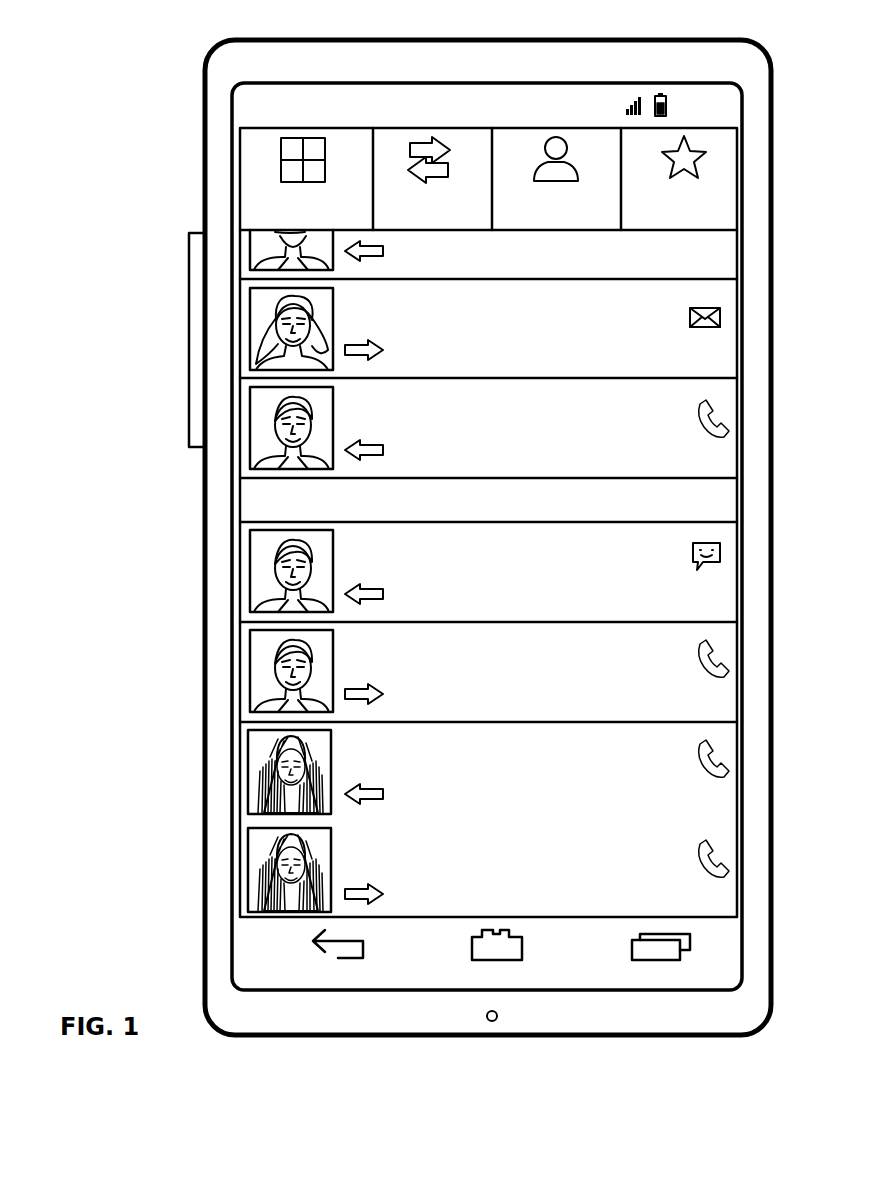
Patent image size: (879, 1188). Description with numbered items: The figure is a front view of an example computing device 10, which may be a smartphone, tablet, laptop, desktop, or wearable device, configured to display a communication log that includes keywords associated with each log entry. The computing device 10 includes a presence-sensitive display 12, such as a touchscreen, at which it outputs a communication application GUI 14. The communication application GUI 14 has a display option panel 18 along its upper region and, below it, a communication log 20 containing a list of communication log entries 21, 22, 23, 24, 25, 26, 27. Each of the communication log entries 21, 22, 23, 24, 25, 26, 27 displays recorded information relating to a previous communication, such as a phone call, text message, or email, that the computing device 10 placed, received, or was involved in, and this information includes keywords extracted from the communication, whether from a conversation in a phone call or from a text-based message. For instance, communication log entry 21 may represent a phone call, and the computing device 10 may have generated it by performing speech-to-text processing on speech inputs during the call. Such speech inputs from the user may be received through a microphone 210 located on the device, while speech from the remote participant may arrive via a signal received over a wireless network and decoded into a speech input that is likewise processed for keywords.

The computing device 10 is at (172, 110).
The presence-sensitive display 12 is at (222, 323).
The communication application GUI 14 is at (200, 907).
The display option panel 18 is at (240, 168).
The communication log 20 is at (232, 233).
The communication log entry 21 is at (597, 858).
The communication log entry 22 is at (620, 756).
The communication log entry 23 is at (589, 656).
The communication log entry 24 is at (582, 568).
The communication log entry 25 is at (592, 415).
The communication log entry 26 is at (592, 316).
The communication log entry 27 is at (630, 275).
The microphone 210 is at (474, 1016).